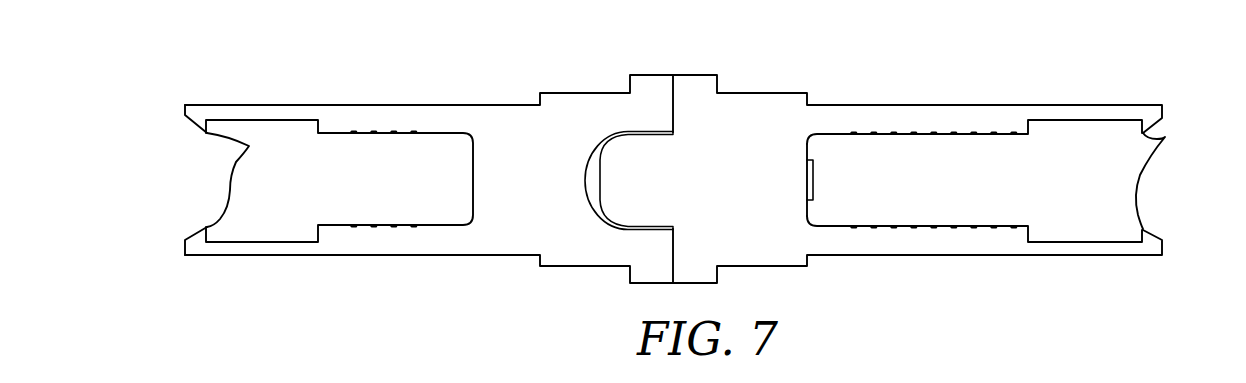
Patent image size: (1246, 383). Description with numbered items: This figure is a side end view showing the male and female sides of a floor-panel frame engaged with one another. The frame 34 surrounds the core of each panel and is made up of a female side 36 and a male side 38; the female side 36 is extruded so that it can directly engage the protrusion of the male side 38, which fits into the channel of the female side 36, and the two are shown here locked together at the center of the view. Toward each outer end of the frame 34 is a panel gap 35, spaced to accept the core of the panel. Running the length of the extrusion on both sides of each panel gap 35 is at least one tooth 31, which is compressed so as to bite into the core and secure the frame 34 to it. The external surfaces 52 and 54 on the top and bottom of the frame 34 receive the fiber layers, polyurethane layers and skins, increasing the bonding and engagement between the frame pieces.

The tooth 31 is at (249, 147).
The frame 34 is at (674, 147).
The panel gap 35 is at (212, 170).
The female side 36 is at (590, 78).
The male side 38 is at (909, 84).
The external surface 52 is at (472, 105).
The external surface 54 is at (472, 255).